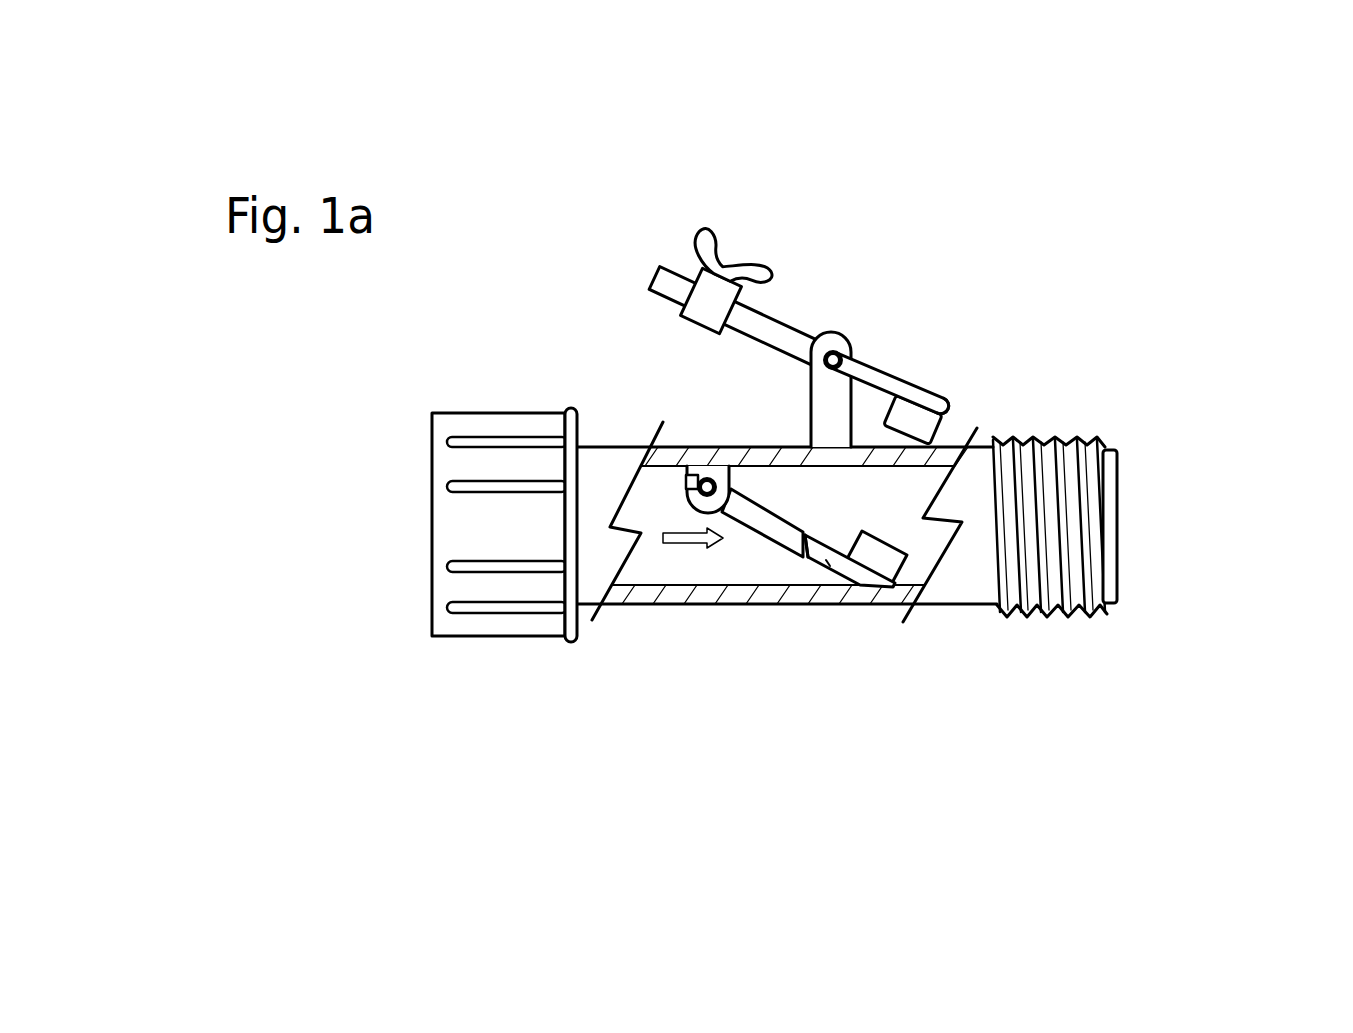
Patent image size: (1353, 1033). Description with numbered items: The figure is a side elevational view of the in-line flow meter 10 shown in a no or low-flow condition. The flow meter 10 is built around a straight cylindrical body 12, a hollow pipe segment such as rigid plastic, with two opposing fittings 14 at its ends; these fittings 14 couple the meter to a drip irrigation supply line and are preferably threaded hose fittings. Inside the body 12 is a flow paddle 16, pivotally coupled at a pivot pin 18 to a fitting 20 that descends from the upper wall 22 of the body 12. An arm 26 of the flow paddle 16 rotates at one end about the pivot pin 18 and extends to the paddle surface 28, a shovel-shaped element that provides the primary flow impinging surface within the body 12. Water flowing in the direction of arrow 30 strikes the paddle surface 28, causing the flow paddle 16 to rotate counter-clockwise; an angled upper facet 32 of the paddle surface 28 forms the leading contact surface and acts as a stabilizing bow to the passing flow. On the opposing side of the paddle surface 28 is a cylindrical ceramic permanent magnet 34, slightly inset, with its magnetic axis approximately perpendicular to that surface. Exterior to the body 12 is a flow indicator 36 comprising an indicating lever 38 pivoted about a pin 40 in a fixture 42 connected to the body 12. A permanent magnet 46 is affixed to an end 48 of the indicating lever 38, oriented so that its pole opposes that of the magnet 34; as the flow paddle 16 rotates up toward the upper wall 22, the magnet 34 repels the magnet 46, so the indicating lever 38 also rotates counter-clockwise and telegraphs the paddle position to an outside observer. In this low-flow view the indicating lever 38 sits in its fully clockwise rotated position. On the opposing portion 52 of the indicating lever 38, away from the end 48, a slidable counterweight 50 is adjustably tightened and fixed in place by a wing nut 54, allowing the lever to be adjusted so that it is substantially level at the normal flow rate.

The in-line flow meter 10 is at (1223, 217).
The body 12 is at (852, 594).
The fittings 14 is at (813, 472).
The flow paddle 16 is at (731, 674).
The pivot pin 18 is at (595, 298).
The fitting 20 is at (593, 369).
The upper wall 22 is at (785, 429).
The arm 26 is at (685, 610).
The paddle surface 28 is at (900, 720).
The arrow 30 is at (584, 623).
The upper facet 32 is at (725, 663).
The permanent magnet 34 is at (935, 670).
The flow indicator 36 is at (987, 171).
The indicating lever 38 is at (947, 289).
The pin 40 is at (923, 215).
The fixture 42 is at (775, 389).
The permanent magnet 46 is at (987, 349).
The end 48 is at (1017, 369).
The counterweight 50 is at (779, 215).
The opposing portion 52 is at (670, 199).
The wing nut 54 is at (750, 161).